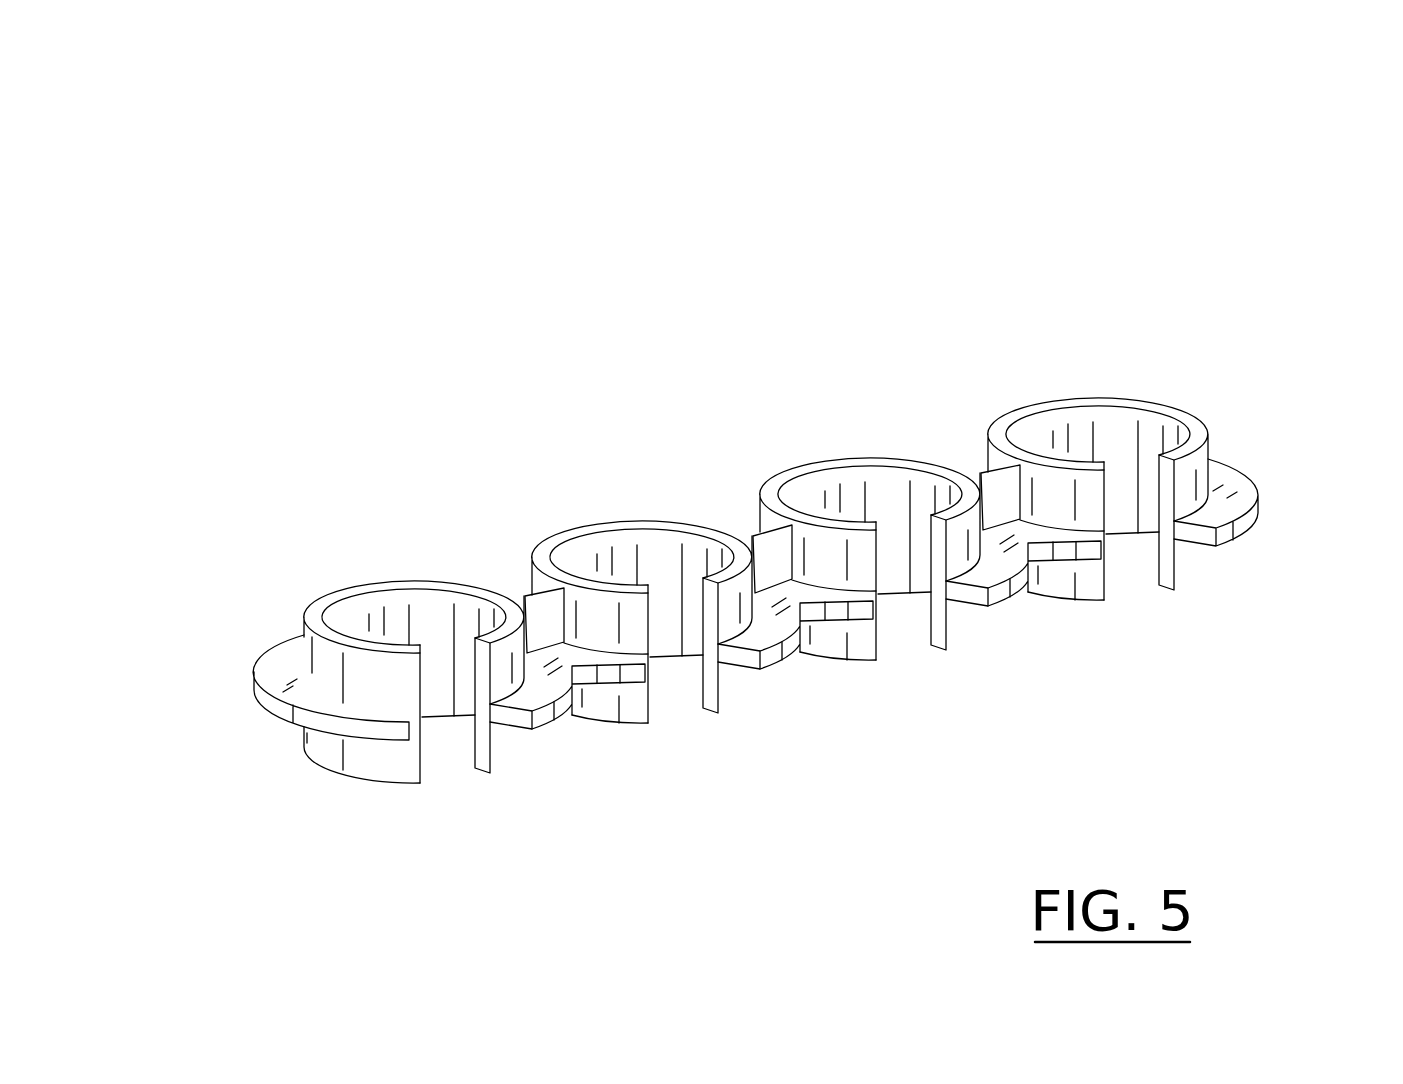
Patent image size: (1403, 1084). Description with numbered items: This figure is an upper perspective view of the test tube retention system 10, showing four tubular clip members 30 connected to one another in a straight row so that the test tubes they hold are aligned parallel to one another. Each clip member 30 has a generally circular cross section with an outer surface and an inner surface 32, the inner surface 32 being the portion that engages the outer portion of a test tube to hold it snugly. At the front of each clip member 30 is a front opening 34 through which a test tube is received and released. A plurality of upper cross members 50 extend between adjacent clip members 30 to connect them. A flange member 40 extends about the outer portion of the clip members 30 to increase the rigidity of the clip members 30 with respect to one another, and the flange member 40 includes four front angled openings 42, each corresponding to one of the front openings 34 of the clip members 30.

The test tube retention system 10 is at (773, 485).
The clip member 30 is at (338, 593).
The inner surface 32 is at (385, 610).
The front opening 34 is at (482, 758).
The flange member 40 is at (273, 707).
The front angled opening 42 is at (508, 717).
The upper cross member 50 is at (537, 600).